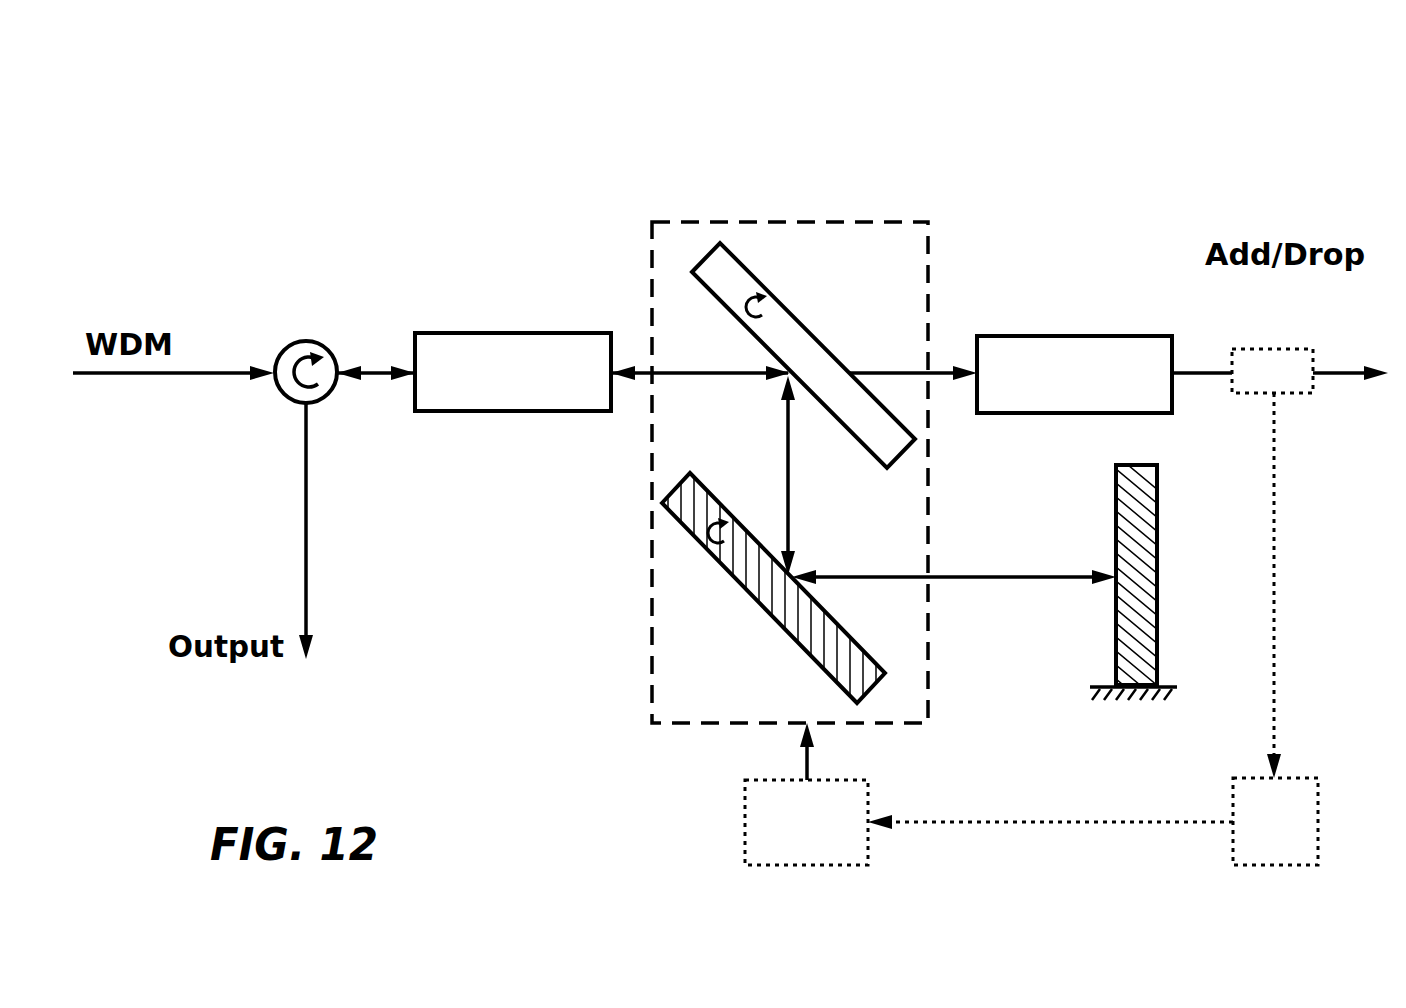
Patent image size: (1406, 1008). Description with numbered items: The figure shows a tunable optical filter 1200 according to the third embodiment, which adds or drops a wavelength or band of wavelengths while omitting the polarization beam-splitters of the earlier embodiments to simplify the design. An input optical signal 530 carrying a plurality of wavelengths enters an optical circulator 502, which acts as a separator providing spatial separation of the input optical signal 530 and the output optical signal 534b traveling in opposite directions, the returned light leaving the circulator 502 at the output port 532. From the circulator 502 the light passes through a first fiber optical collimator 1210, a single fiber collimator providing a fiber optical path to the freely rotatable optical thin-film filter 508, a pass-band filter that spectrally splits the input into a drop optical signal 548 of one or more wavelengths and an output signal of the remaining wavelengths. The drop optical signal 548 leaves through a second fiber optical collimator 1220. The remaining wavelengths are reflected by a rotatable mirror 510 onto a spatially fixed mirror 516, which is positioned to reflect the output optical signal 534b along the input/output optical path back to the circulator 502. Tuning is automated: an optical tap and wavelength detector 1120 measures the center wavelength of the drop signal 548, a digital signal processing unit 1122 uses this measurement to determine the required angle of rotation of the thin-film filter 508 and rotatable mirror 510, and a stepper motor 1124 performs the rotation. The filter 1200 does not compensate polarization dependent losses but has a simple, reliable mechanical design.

The tunable filter 1200 is at (315, 118).
The optical circulator 502 is at (305, 340).
The input optical signal 530 is at (237, 372).
The output port 532 is at (306, 472).
The output optical signal 534b is at (345, 377).
The first fiber optical collimator 1210 is at (515, 333).
The optical thin-film filter 508 is at (748, 272).
The rotatable mirror 510 is at (812, 662).
The spatially fixed mirror 516 is at (1116, 515).
The second fiber optical collimator 1220 is at (1073, 333).
The drop optical signal 548 is at (1335, 372).
The optical tap and wavelength detector 1120 is at (1232, 383).
The digital signal processing unit 1122 is at (1257, 778).
The stepper motor 1124 is at (868, 806).